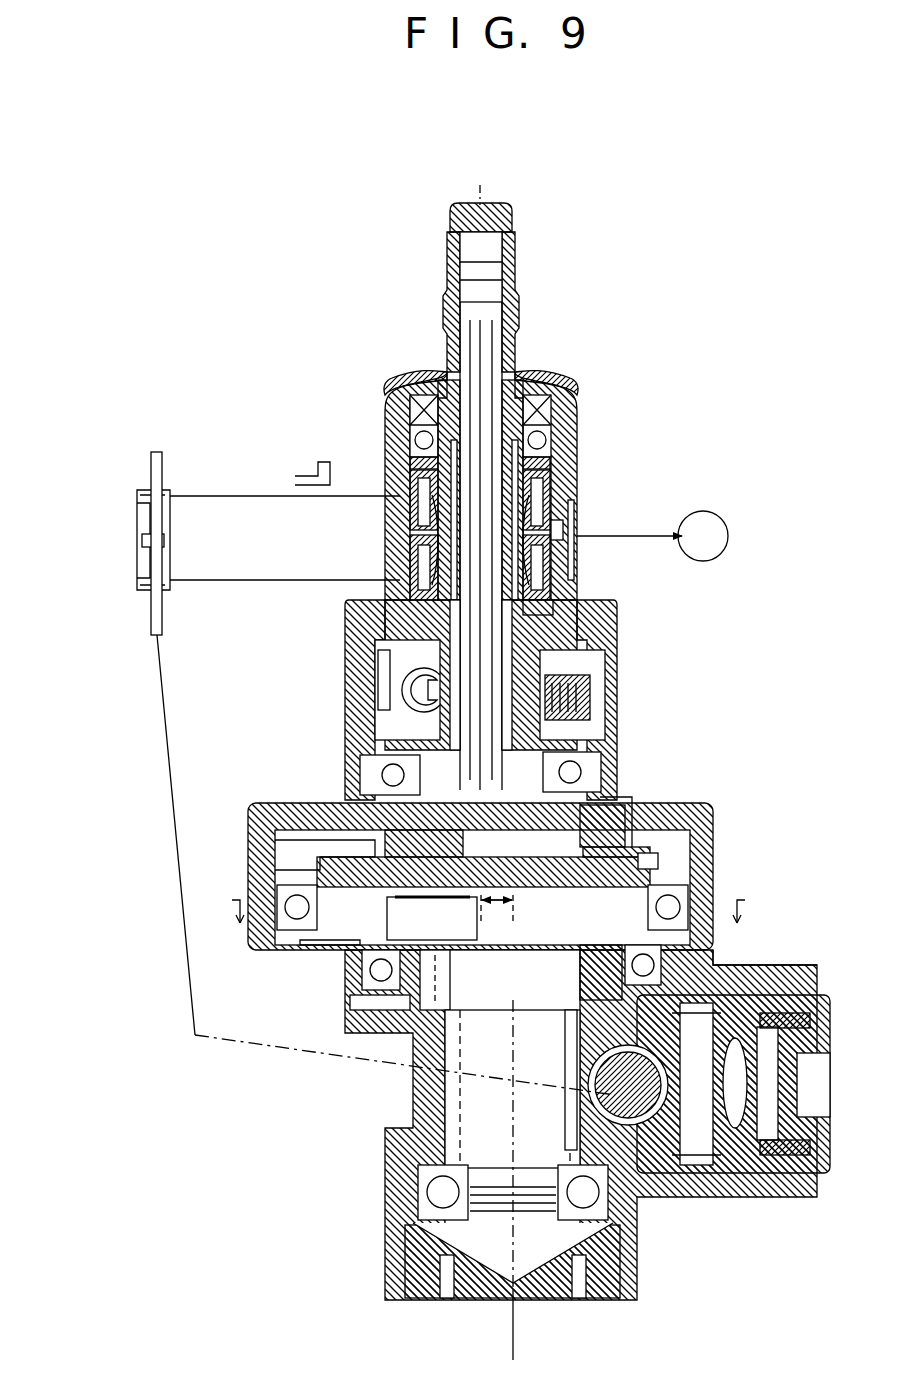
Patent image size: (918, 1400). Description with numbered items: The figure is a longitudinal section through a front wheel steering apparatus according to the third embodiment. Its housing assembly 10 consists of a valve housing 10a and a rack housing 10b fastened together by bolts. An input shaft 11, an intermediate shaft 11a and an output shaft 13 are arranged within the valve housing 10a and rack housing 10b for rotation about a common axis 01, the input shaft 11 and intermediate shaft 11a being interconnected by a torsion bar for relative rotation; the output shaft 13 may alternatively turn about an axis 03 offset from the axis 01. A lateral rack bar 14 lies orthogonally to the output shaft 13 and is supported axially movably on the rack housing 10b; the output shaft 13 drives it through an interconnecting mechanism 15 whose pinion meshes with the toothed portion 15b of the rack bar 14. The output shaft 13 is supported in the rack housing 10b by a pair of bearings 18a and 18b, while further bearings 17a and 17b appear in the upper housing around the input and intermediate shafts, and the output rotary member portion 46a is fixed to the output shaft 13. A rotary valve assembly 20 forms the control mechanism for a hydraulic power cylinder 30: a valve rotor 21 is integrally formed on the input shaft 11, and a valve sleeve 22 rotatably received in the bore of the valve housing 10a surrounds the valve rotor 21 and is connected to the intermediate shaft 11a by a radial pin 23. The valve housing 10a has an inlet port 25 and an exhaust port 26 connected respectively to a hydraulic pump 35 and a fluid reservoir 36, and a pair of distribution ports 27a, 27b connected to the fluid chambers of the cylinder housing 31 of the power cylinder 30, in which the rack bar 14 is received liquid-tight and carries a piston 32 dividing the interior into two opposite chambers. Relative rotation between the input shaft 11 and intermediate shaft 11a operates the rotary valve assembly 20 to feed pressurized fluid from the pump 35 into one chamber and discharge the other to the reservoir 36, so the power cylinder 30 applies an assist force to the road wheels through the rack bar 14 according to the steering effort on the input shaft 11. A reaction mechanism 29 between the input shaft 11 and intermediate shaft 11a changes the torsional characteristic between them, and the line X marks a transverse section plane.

The common axis 01 is at (447, 258).
The axis of lower shaft 03 is at (510, 1322).
The housing assembly 10 is at (252, 812).
The valve housing 10a is at (348, 696).
The rack housing 10b is at (388, 1212).
The input shaft 11 is at (548, 412).
The intermediate shaft 11a is at (437, 762).
The output shaft 13 is at (470, 1080).
The rack bar 14 is at (162, 612).
The interconnecting mechanism 15 is at (590, 1150).
The toothed portion 15b is at (572, 1090).
The upper bearing 17a is at (416, 438).
The lower bearing 17b is at (588, 773).
The bearing 18a is at (660, 966).
The bearing 18b is at (425, 1178).
The rotary valve assembly 20 is at (572, 552).
The valve rotor 21 is at (548, 482).
The valve sleeve 22 is at (552, 533).
The radial pin 23 is at (548, 607).
The inlet port 25 is at (562, 548).
The exhaust port 26 is at (408, 470).
The distribution port 27a is at (410, 497).
The distribution port 27b is at (410, 582).
The reaction mechanism 29 is at (398, 672).
The hydraulic power cylinder 30 is at (132, 505).
The cylinder housing 31 is at (137, 572).
The piston 32 is at (165, 545).
The hydraulic pump 35 is at (723, 545).
The fluid reservoir 36 is at (295, 480).
The sleeve portion 46a is at (572, 1015).
The section line X- X is at (485, 915).